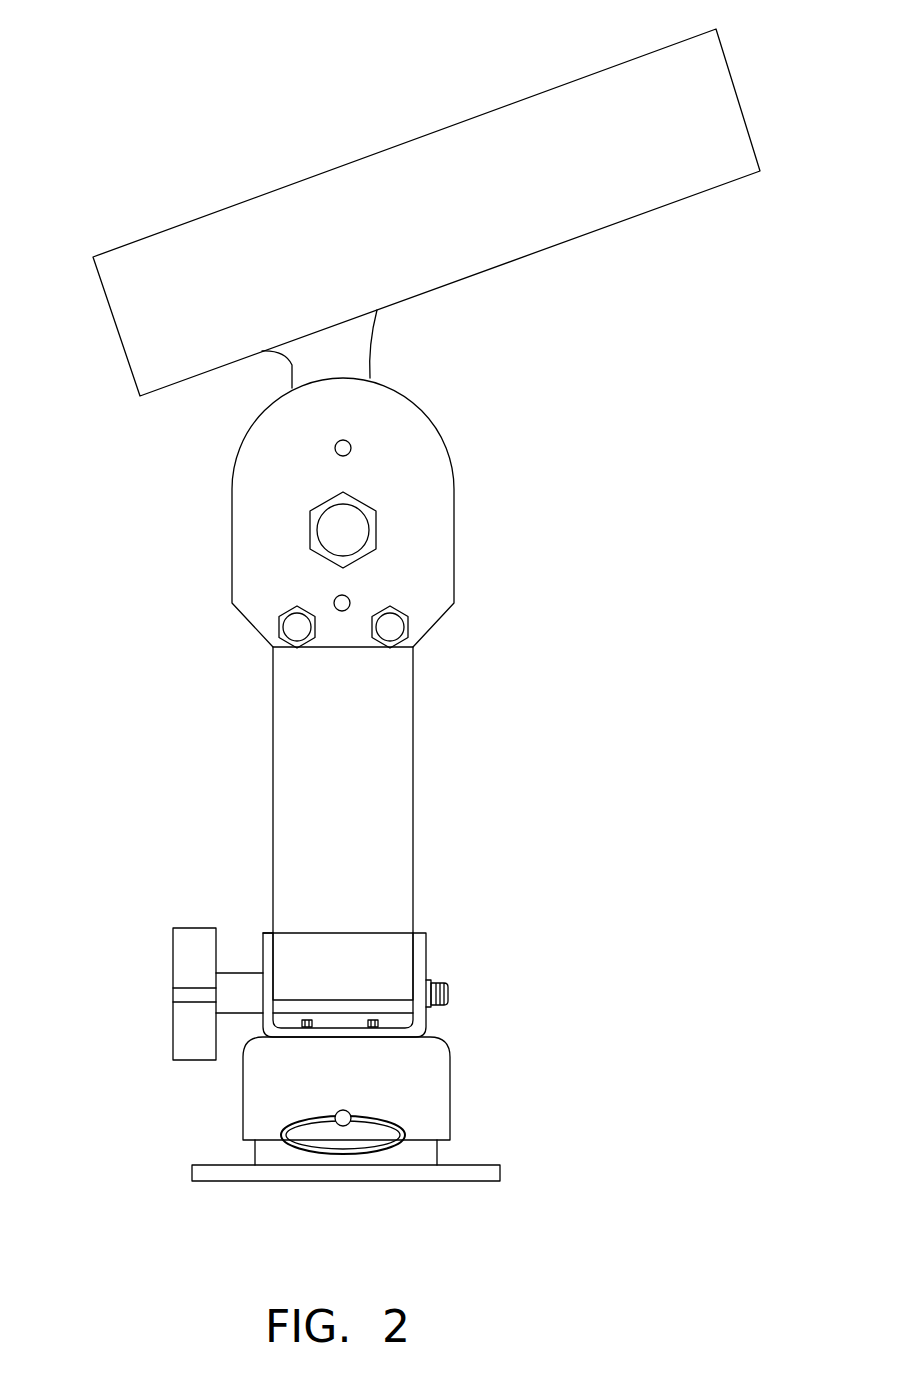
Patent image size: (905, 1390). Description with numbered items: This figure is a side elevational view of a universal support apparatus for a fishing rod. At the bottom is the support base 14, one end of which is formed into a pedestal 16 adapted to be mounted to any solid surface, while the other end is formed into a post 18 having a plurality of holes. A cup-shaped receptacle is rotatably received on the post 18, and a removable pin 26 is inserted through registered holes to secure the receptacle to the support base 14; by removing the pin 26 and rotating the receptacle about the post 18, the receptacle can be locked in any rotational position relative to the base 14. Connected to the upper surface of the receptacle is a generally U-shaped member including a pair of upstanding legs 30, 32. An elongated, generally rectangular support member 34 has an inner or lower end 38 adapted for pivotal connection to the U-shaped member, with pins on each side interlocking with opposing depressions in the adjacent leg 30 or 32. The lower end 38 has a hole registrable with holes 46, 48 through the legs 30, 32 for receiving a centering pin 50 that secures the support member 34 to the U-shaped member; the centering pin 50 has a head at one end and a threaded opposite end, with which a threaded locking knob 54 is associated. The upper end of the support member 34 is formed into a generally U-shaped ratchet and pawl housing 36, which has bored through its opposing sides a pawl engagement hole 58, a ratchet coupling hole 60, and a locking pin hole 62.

The support base 14 is at (210, 1165).
The pedestal 16 is at (500, 1172).
The post 18 is at (437, 1153).
The removable pin 26 is at (335, 1115).
The upstanding leg 30 is at (418, 933).
The upstanding leg 32 is at (263, 932).
The support member 34 is at (381, 770).
The ratchet and pawl housing 36 is at (268, 503).
The lower end 38 is at (318, 983).
The hole 46 is at (262, 1013).
The hole 48 is at (428, 1008).
The centering pin 50 is at (448, 987).
The threaded locking knob 54 is at (172, 967).
The pawl engagement hole 58 is at (353, 530).
The ratchet coupling hole 60 is at (350, 444).
The locking pin hole 62 is at (334, 598).